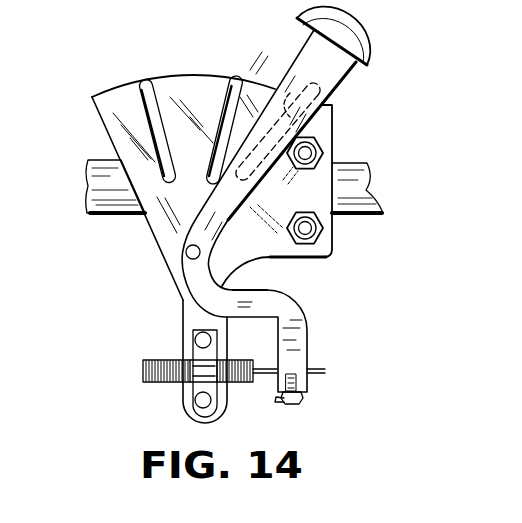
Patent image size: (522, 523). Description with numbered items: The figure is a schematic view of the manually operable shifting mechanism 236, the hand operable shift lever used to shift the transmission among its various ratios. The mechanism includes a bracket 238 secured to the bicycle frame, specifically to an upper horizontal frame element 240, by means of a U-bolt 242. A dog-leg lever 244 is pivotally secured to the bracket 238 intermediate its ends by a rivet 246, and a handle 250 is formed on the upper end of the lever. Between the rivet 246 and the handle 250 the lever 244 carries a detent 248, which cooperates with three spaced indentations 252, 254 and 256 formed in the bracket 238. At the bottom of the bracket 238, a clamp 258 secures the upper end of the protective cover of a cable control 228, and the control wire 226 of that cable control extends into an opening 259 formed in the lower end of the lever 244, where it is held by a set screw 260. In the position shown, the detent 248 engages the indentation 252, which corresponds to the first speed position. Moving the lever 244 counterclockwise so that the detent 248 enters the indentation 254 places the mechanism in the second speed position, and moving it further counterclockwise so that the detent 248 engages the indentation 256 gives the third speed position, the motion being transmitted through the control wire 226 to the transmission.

The manually operable shifting mechanism 236 is at (100, 63).
The bracket 238 is at (110, 113).
The upper horizontal frame element 240 is at (358, 164).
The U-bolt 242 is at (304, 232).
The dog-leg lever 244 is at (265, 199).
The rivet 246 is at (189, 258).
The detent 248 is at (311, 196).
The handle 250 is at (357, 26).
The indentation 252 is at (315, 86).
The indentation 254 is at (236, 84).
The indentation 256 is at (150, 90).
The clamp 258 is at (198, 393).
The cable control 228 is at (160, 356).
The control wire 226 is at (317, 368).
The opening 259 is at (302, 400).
The set screw 260 is at (286, 402).